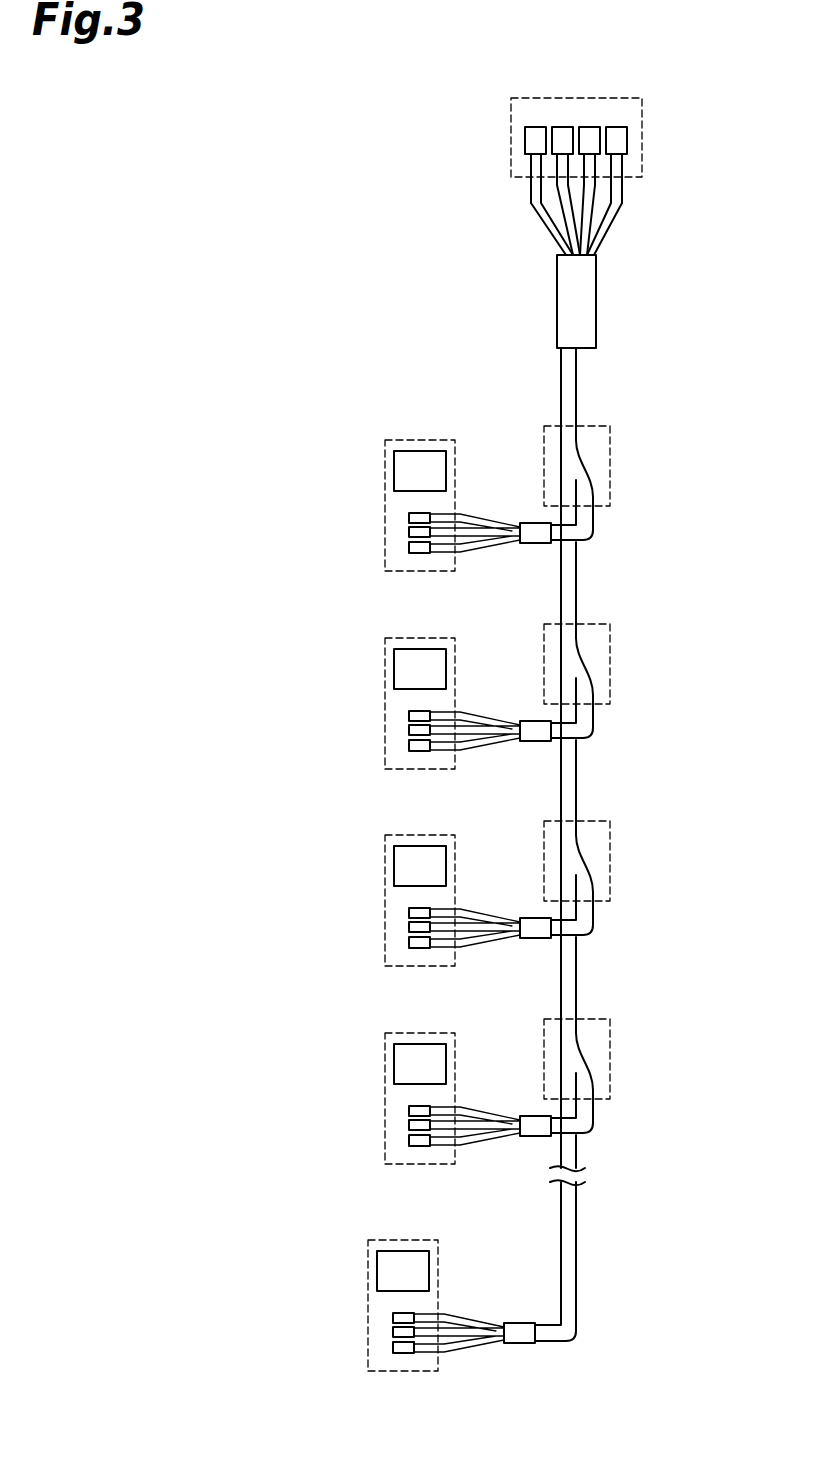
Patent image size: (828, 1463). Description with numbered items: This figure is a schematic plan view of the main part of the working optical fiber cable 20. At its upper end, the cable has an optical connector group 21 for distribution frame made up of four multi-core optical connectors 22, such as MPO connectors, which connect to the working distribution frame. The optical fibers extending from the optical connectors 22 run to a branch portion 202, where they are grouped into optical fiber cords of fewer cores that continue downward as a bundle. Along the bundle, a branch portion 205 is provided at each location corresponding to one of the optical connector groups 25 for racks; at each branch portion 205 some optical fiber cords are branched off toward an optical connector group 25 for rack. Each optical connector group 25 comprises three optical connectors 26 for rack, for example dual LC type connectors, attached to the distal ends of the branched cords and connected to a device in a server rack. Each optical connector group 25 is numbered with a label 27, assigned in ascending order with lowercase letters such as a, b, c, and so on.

The working optical fiber cable 20 is at (311, 150).
The optical connector group for distribution frame 21 is at (643, 138).
The optical connector for distribution frame 22 is at (531, 127).
The branch portion 202 is at (597, 300).
The branch portion 205 is at (612, 464).
The optical connector group for rack 25 is at (445, 440).
The optical connector for rack 26 is at (409, 547).
The label 27 is at (410, 451).